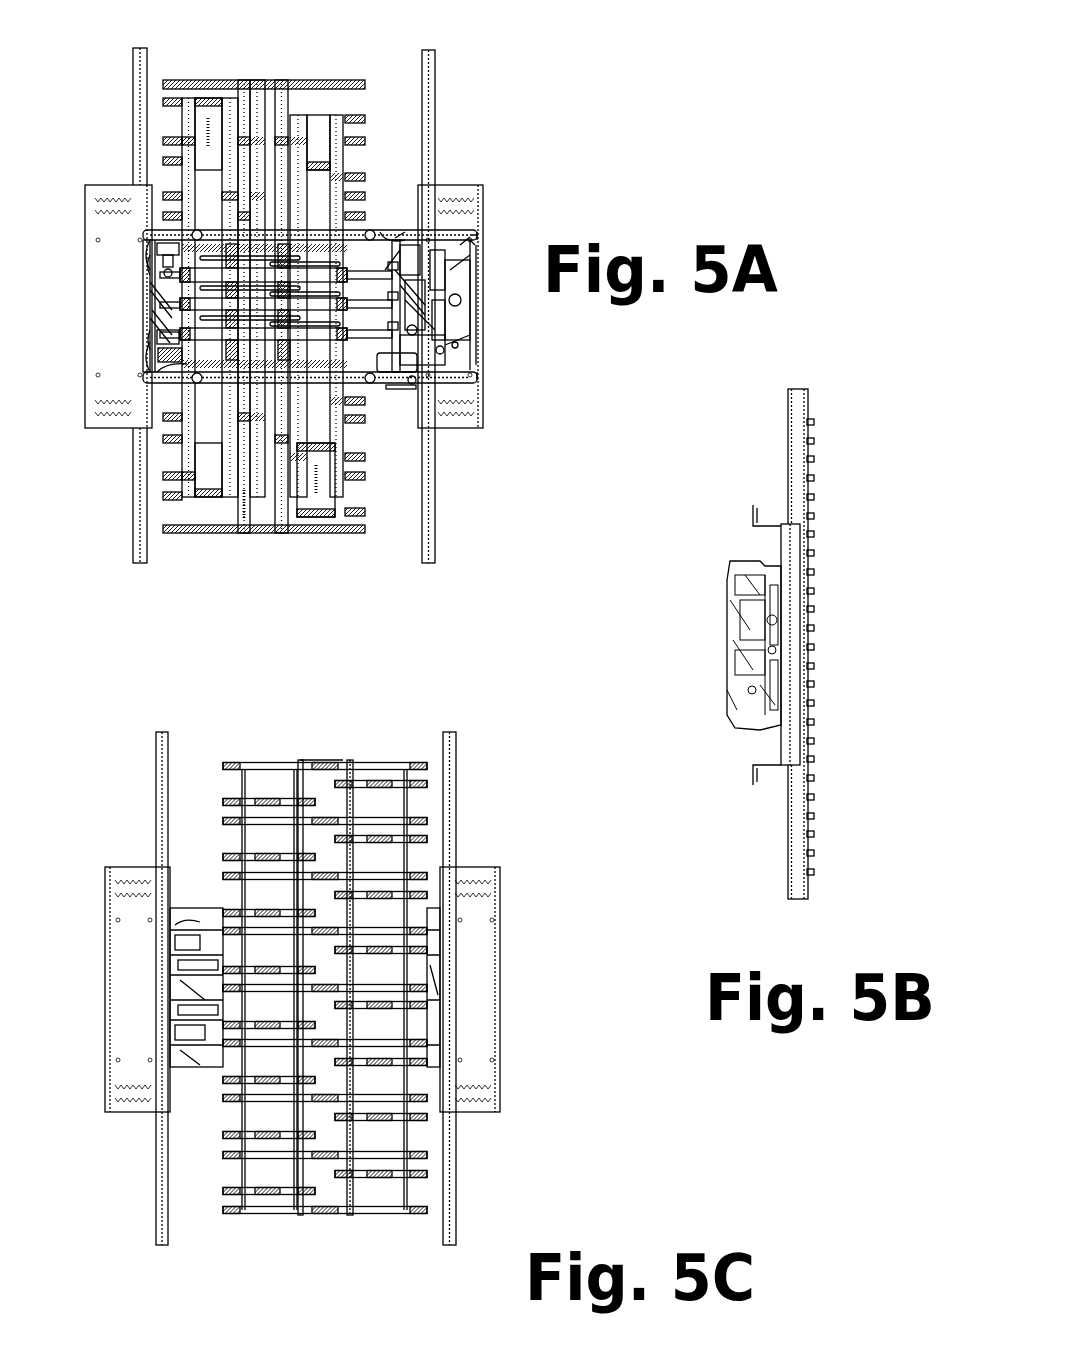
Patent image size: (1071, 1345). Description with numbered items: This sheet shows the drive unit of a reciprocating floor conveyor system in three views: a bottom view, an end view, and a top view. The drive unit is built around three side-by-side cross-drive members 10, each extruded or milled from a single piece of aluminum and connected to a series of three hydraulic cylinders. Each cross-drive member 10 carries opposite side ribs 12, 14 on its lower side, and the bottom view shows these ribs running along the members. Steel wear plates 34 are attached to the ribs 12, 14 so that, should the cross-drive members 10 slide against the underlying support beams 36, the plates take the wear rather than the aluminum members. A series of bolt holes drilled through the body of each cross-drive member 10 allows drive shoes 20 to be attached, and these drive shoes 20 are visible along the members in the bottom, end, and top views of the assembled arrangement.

In FIG. 5A, the cross-drive member 10 is at (343, 147).
In FIG. 5B, the cross-drive member 10 is at (780, 408).
In FIG. 5C, the cross-drive member 10 is at (378, 808).
In FIG. 5A, the side rib 12 is at (242, 113).
In FIG. 5A, the side rib 14 is at (187, 130).
In FIG. 5A, the drive shoe 20 is at (363, 510).
In FIG. 5B, the drive shoe 20 is at (809, 427).
In FIG. 5C, the drive shoe 20 is at (292, 1197).
In FIG. 5A, the steel wear plate 34 is at (227, 183).
In FIG. 5A, the support beam 36 is at (345, 232).